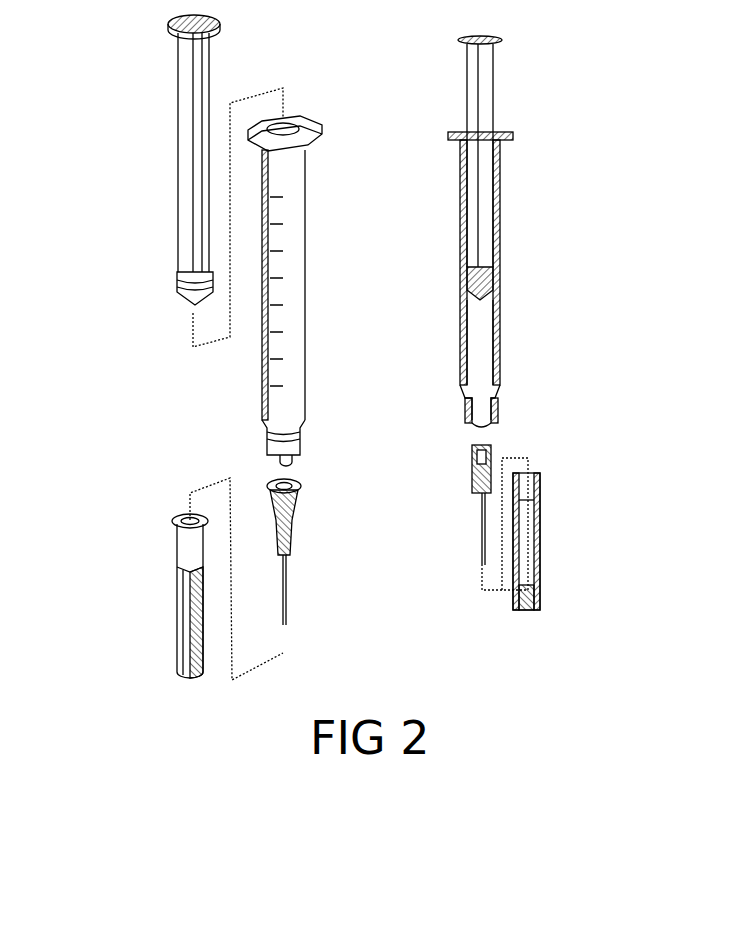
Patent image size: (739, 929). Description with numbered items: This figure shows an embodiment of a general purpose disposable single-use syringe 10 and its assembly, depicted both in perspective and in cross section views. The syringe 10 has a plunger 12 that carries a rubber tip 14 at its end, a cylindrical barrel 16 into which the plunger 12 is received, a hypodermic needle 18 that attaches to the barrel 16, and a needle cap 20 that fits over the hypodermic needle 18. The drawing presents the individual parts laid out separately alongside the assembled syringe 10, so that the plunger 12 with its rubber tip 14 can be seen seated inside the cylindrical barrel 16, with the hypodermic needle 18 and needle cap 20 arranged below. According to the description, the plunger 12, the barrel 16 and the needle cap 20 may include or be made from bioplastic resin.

The disposable single-use syringe 10 is at (493, 625).
The plunger 12 is at (465, 103).
The rubber tip 14 is at (177, 292).
The cylindrical barrel 16 is at (460, 323).
The hypodermic needle 18 is at (293, 535).
The needle cap 20 is at (520, 592).